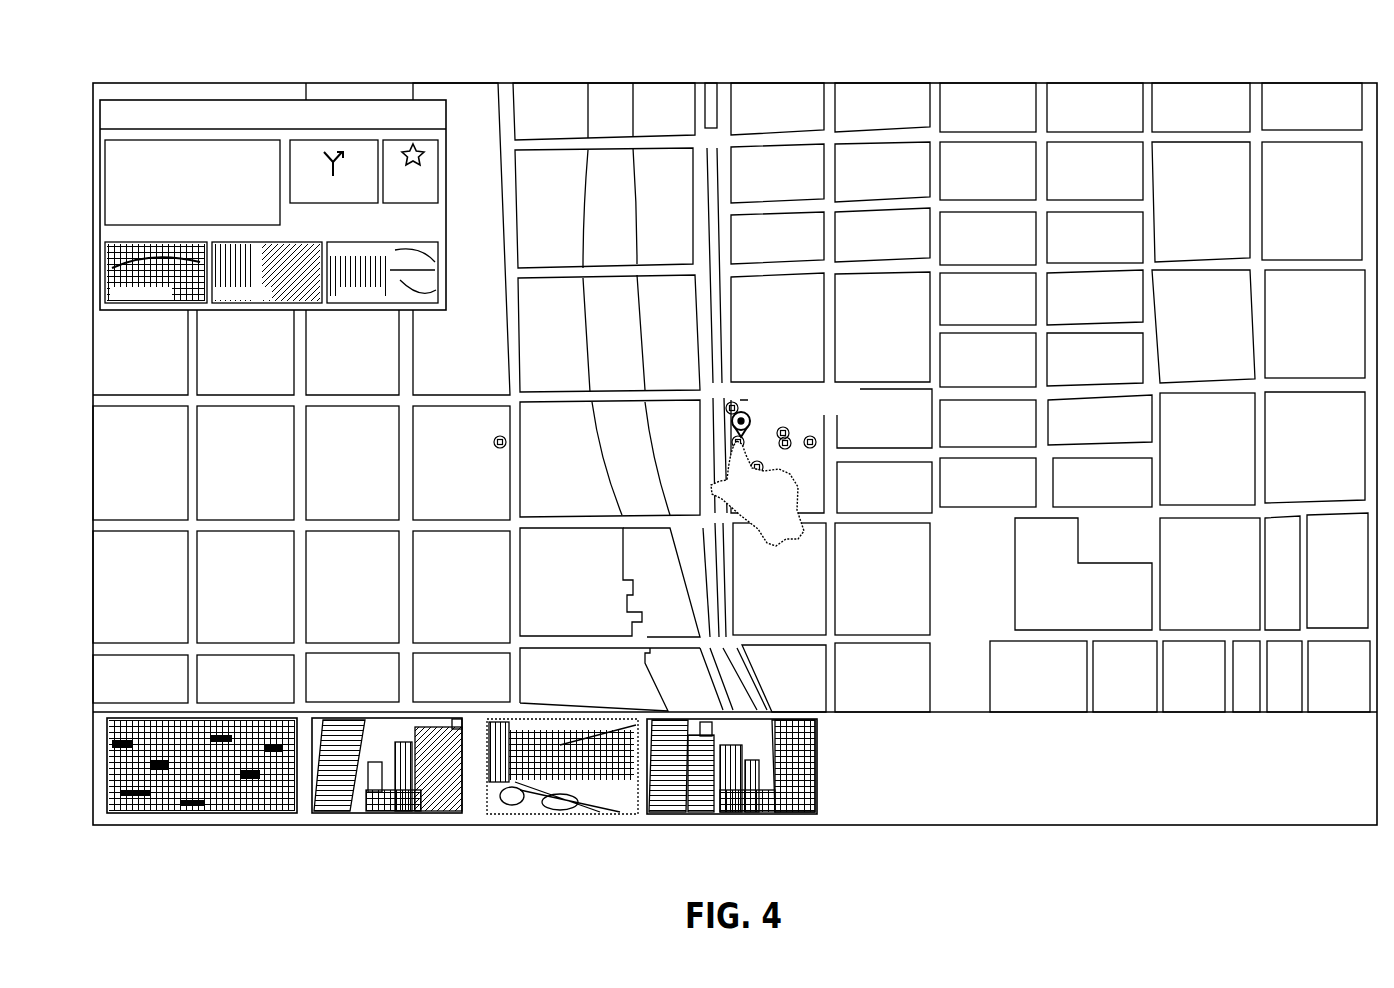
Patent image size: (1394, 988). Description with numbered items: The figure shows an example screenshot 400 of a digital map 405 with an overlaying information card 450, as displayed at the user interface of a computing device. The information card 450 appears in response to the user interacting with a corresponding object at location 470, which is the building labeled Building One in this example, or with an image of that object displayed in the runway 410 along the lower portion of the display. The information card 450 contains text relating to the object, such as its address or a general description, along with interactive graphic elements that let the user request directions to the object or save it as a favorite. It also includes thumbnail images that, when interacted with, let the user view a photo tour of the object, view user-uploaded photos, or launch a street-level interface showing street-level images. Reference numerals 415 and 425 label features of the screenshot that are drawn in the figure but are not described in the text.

The screenshot 400 is at (730, 33).
The digital map 405 is at (973, 82).
The runway 410 is at (932, 826).
The information panel 415 is at (309, 100).
The image thumbnails 425 is at (202, 815).
The information card 450 is at (448, 185).
The location 470 is at (733, 422).